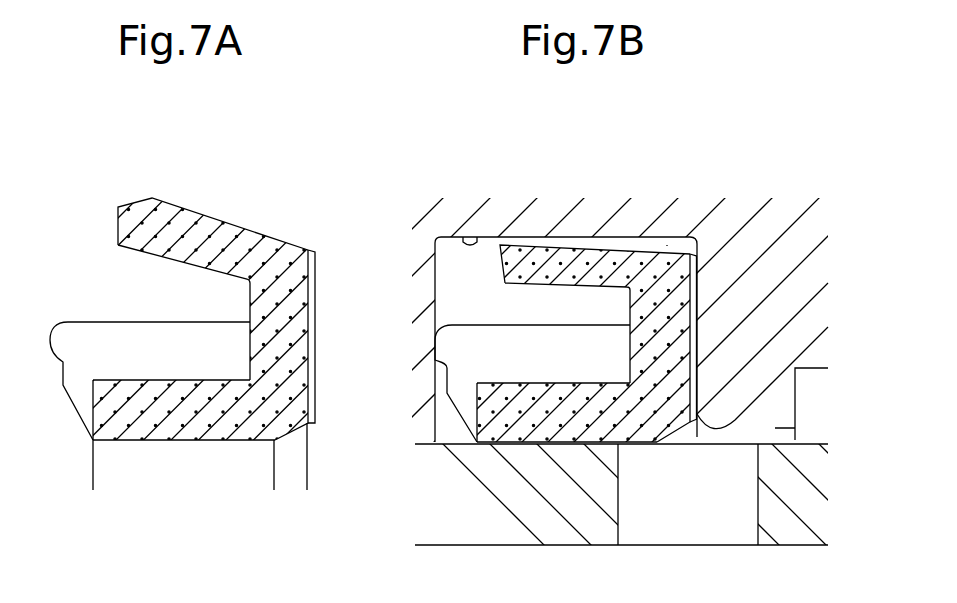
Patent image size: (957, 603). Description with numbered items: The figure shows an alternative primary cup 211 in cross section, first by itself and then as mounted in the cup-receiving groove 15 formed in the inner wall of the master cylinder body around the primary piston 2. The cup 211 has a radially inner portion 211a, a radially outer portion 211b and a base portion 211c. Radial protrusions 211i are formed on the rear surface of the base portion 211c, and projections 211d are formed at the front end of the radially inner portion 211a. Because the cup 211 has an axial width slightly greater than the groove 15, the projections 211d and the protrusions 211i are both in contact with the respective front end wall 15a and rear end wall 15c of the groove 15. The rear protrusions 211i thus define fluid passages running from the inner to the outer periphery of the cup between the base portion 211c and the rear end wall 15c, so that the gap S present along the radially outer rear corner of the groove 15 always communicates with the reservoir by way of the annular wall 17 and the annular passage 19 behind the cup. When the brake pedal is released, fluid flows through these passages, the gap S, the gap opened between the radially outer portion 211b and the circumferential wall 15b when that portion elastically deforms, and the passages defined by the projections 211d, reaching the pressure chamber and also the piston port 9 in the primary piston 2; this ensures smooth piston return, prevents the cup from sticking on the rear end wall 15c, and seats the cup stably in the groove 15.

In FIG. 7A, the primary cup 211 is at (226, 212).
In FIG. 7B, the primary cup 211 is at (567, 447).
In FIG. 7A, the radially inner portion 211a is at (183, 424).
In FIG. 7B, the radially inner portion 211a is at (505, 412).
In FIG. 7A, the radially outer portion 211b is at (145, 220).
In FIG. 7B, the radially outer portion 211b is at (567, 257).
In FIG. 7A, the base portion 211c is at (285, 264).
In FIG. 7B, the base portion 211c is at (700, 280).
In FIG. 7A, the projections 211d is at (56, 337).
In FIG. 7B, the projections 211d is at (443, 343).
In FIG. 7A, the radial protrusions 211i is at (317, 288).
In FIG. 7B, the radial protrusions 211i is at (700, 300).
In FIG. 7B, the groove 15 is at (487, 263).
In FIG. 7B, the front end wall 15a is at (437, 242).
In FIG. 7B, the circumferential wall 15b is at (457, 235).
In FIG. 7B, the rear end wall 15c is at (700, 331).
In FIG. 7B, the gap S is at (667, 245).
In FIG. 7B, the annular wall 17 is at (727, 400).
In FIG. 7B, the annular passage 19 is at (795, 428).
In FIG. 7B, the piston port 9 is at (702, 517).
In FIG. 7B, the primary piston 2 is at (795, 527).